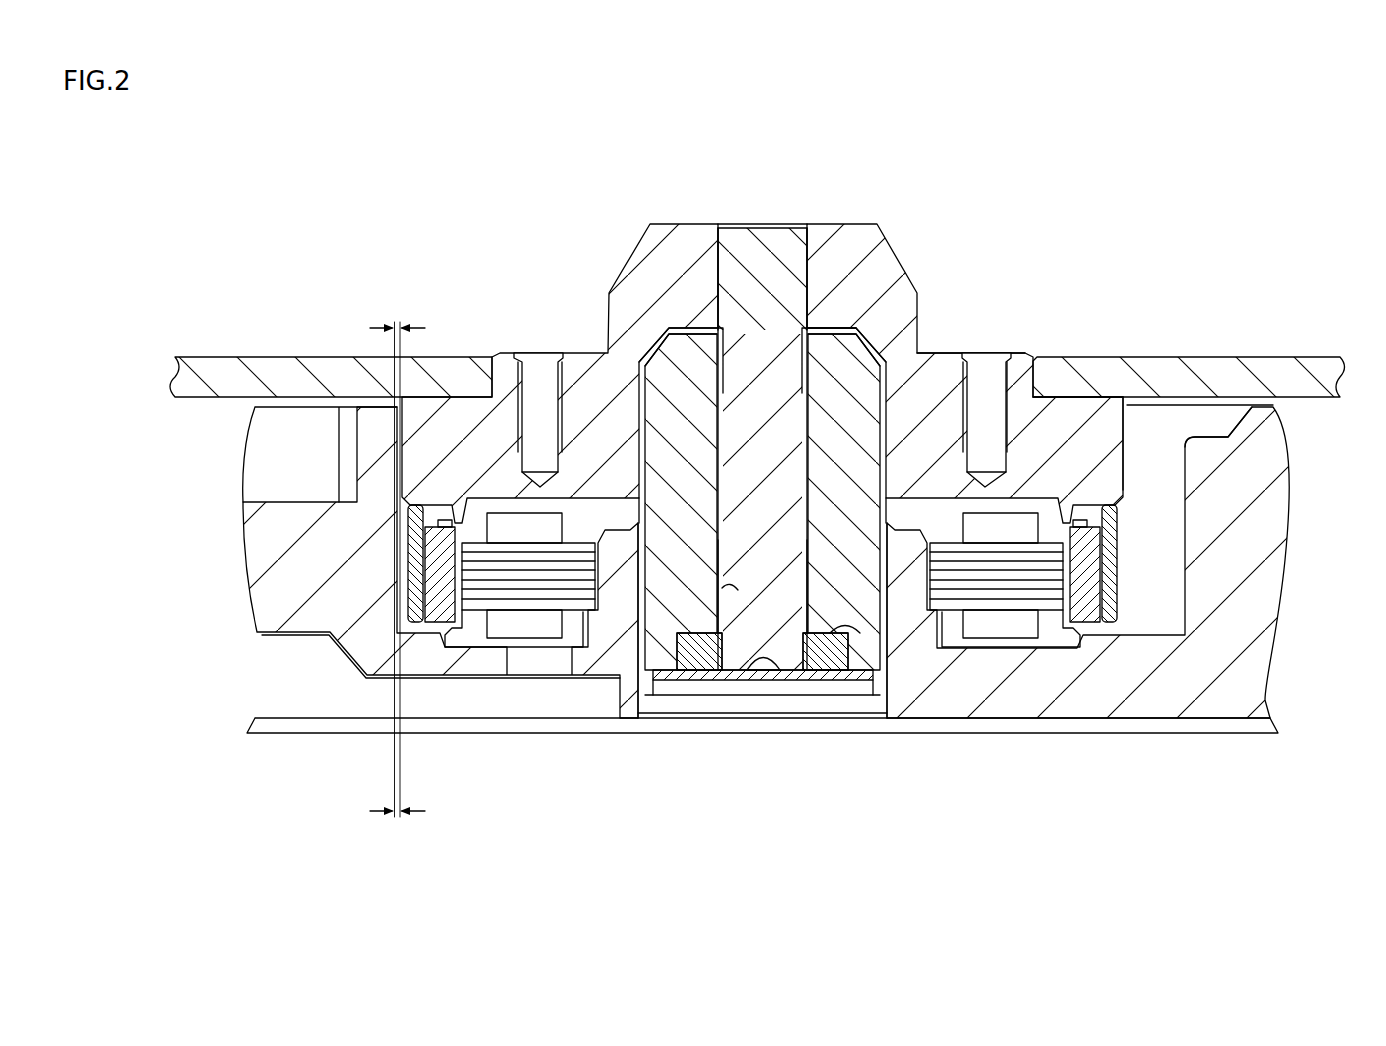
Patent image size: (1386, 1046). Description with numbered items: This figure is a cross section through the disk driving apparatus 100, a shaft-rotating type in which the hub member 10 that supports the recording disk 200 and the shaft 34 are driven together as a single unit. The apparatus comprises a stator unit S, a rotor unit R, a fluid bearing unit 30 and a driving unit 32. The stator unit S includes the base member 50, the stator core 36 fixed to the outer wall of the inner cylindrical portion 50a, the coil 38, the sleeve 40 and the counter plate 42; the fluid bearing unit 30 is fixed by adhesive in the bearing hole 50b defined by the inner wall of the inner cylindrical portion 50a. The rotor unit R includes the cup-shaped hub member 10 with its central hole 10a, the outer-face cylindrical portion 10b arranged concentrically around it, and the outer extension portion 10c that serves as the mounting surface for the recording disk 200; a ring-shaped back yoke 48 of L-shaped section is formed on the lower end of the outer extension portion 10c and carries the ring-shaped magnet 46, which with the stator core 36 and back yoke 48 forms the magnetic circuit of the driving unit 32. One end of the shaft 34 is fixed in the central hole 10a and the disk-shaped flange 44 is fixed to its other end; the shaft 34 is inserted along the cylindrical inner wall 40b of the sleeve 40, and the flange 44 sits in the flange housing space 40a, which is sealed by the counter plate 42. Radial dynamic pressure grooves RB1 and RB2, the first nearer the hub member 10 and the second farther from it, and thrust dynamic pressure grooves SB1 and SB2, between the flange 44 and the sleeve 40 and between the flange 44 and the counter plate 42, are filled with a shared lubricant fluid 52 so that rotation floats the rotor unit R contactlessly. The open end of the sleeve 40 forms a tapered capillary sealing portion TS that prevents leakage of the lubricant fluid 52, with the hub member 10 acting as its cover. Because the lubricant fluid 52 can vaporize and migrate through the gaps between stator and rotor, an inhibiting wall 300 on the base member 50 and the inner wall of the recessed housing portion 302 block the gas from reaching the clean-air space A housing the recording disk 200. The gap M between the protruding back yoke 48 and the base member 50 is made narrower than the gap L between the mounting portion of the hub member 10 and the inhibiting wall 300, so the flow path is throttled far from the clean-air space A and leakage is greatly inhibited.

The disk driving apparatus 100 is at (970, 174).
The hub member 10 is at (833, 250).
The central hole 10a is at (803, 280).
The outer-face cylindrical portion 10b is at (1020, 387).
The outer extension portion 10c is at (1112, 428).
The fluid bearing unit 30 is at (683, 400).
The driving unit 32 is at (580, 541).
The shaft 34 is at (745, 260).
The stator core 36 is at (1085, 560).
The coil 38 is at (507, 527).
The sleeve 40 is at (845, 382).
The flange housing space 40a is at (685, 650).
The cylindrical inner wall 40b is at (800, 510).
The counter plate 42 is at (840, 645).
The flange 44 is at (700, 681).
The magnet 46 is at (438, 623).
The back yoke 48 is at (413, 618).
The base member 50 is at (1222, 697).
The inner cylindrical portion 50a is at (905, 550).
The bearing hole 50b is at (640, 600).
The lubricant fluid 52 is at (813, 323).
The recording disk 200 is at (1285, 362).
The inhibiting wall 300 is at (384, 480).
The recessed housing portion 302 is at (1172, 500).
The capillary sealing portion TS is at (717, 330).
The radial dynamic pressure groove RB1 is at (758, 668).
The radial dynamic pressure groove RB2 is at (727, 592).
The thrust dynamic pressure groove SB1 is at (858, 660).
The thrust dynamic pressure groove SB2 is at (813, 671).
The rotor unit R is at (953, 351).
The stator unit S is at (365, 681).
The gap L is at (397, 557).
The gap M is at (397, 828).
The clean-air space A is at (234, 428).